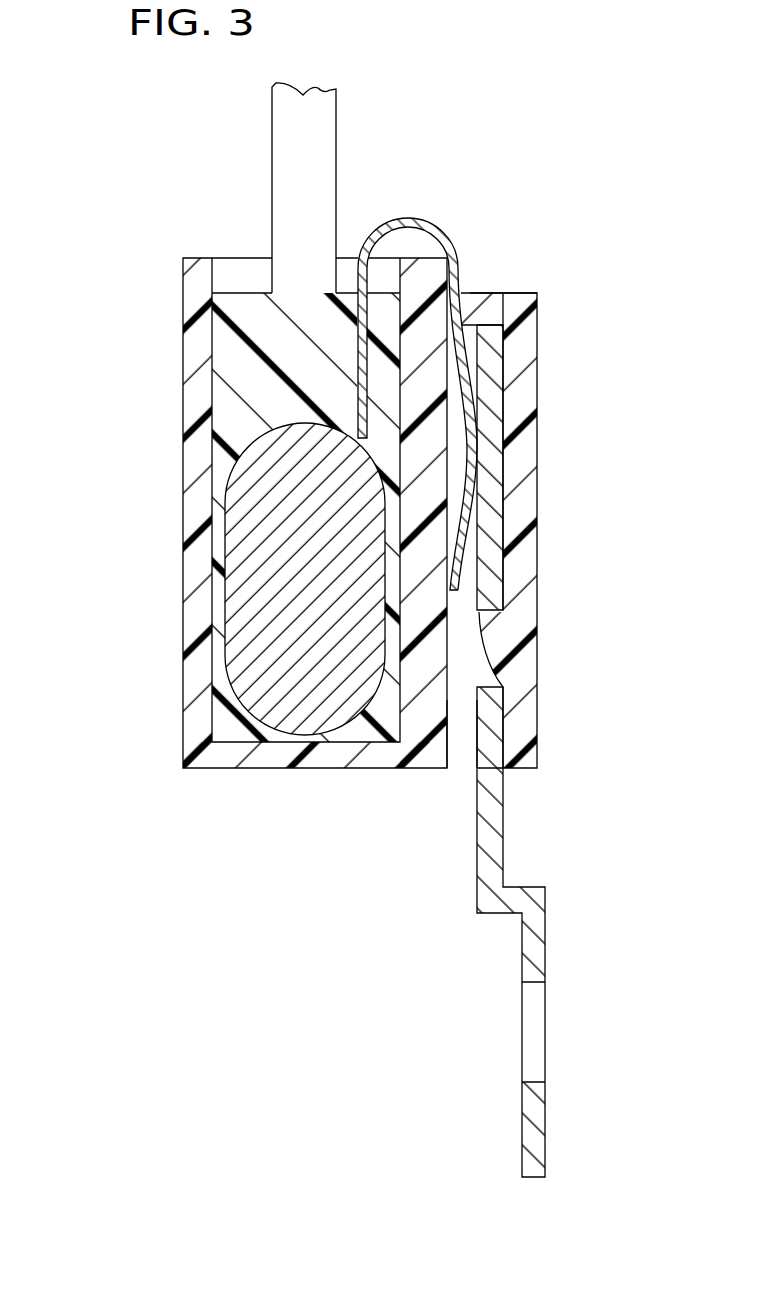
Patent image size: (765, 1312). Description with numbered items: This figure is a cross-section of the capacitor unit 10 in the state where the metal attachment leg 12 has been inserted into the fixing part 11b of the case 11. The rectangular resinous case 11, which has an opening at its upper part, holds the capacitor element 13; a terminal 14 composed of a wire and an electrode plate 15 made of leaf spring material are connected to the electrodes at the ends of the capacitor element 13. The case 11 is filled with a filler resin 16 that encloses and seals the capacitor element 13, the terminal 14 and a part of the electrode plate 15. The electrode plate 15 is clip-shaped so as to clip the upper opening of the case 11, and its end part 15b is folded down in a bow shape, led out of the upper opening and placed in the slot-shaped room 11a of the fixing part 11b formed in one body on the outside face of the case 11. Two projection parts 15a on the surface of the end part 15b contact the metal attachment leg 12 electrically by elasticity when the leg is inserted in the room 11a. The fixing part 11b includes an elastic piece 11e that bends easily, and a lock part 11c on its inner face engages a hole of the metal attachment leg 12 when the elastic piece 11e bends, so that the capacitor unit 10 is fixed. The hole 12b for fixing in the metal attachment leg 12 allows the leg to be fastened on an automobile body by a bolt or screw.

The capacitor unit 10 is at (178, 521).
The case 11 is at (193, 448).
The room 11a is at (461, 748).
The fixing part 11b is at (517, 300).
The lock part 11c is at (493, 628).
The elastic piece 11e is at (527, 553).
The metal attachment leg 12 is at (493, 783).
The hole for fixing 12b is at (535, 1028).
The capacitor element 13 is at (305, 725).
The terminal 14 is at (288, 167).
The electrode plate 15 is at (450, 237).
The projection parts 15a is at (475, 453).
The end part 15b is at (468, 357).
The filler resin 16 is at (222, 342).